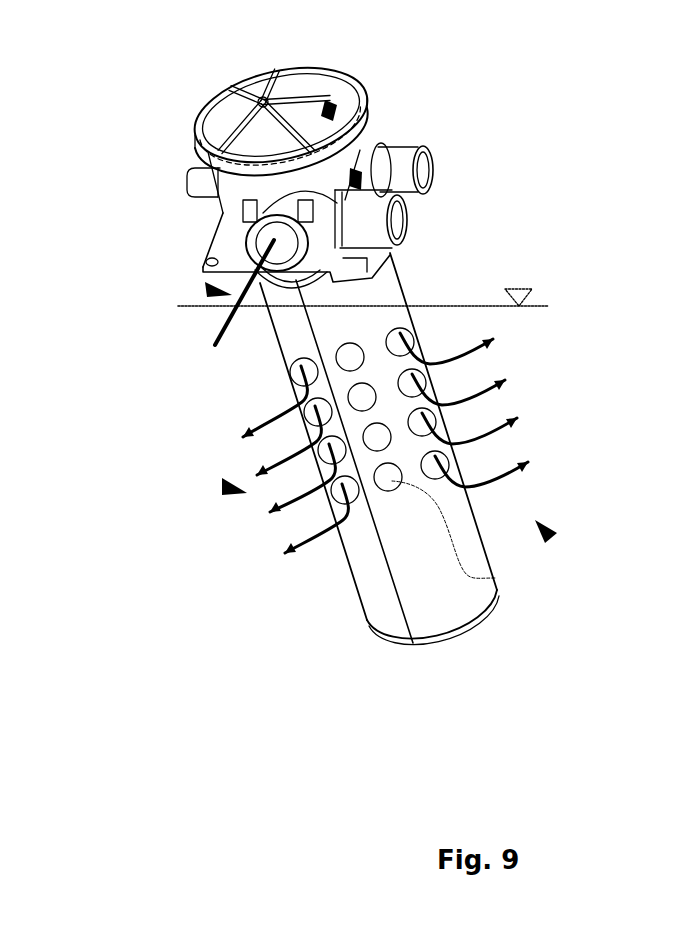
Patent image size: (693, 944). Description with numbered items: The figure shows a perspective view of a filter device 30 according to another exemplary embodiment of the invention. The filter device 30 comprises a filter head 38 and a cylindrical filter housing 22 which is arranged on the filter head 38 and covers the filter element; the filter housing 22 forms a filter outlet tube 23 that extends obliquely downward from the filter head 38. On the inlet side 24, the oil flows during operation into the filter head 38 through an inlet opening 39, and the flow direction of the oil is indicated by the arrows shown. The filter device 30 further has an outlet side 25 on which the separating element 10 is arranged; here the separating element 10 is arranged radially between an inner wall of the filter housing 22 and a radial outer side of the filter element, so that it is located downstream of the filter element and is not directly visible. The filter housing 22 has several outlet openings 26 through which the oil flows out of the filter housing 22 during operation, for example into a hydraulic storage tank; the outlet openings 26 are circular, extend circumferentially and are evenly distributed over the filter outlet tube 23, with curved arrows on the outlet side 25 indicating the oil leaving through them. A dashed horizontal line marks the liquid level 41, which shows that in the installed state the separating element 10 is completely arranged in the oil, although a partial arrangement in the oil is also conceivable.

The separating element 10 is at (497, 604).
The filter housing 22 is at (448, 423).
The filter outlet tube 23 is at (480, 513).
The inlet side 24 is at (205, 287).
The outlet side 25 is at (222, 486).
The outlet openings 26 is at (388, 492).
The filter device 30 is at (492, 195).
The filter head 38 is at (365, 110).
The inlet opening 39 is at (257, 242).
The liquid level 41 is at (532, 289).